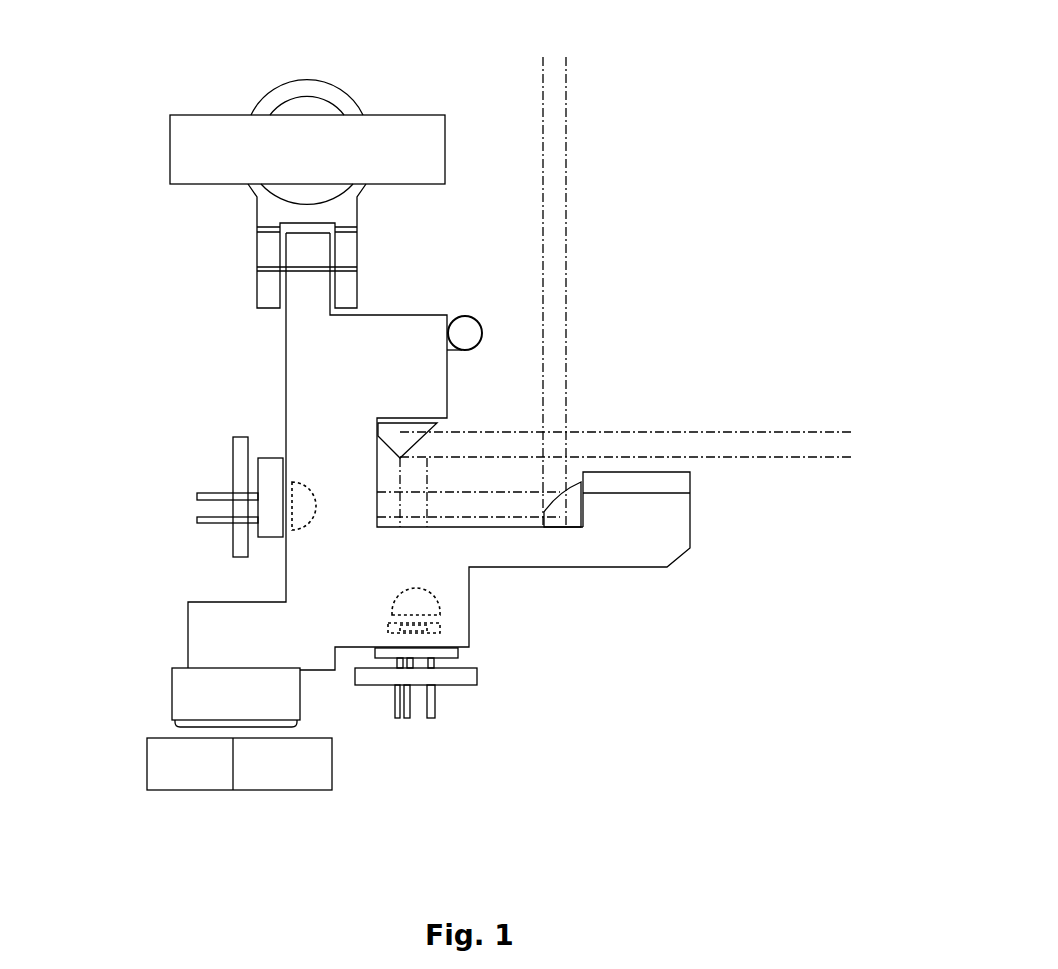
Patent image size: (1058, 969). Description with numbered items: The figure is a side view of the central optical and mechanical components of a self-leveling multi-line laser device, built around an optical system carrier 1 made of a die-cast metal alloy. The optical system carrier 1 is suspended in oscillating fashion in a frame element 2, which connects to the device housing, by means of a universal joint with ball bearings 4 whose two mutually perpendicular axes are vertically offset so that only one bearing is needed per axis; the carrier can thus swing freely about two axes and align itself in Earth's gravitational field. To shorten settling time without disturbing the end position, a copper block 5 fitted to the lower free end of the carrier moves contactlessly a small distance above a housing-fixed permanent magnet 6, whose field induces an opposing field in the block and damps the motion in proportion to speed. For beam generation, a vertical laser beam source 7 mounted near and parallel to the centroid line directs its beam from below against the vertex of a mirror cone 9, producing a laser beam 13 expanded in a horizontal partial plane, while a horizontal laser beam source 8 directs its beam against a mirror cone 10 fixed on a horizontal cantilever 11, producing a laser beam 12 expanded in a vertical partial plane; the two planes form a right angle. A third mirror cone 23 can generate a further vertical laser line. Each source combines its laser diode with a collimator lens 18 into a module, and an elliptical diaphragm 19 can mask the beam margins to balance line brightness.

The optical system carrier 1 is at (307, 370).
The frame element 2 is at (215, 155).
The ball bearings 4 is at (310, 105).
The copper block 5 is at (238, 690).
The permanent magnet 6 is at (275, 765).
The vertical laser beam source 7 is at (422, 655).
The horizontal laser beam source 8 is at (269, 510).
The mirror cone 9 is at (412, 435).
The mirror cone 10 is at (563, 508).
The horizontal cantilever 11 is at (672, 522).
The laser beam 12 is at (556, 155).
The laser beam 13 is at (713, 445).
The collimator lens 18 is at (300, 519).
The elliptical diaphragm 19 is at (432, 630).
The third mirror cone 23 is at (465, 333).